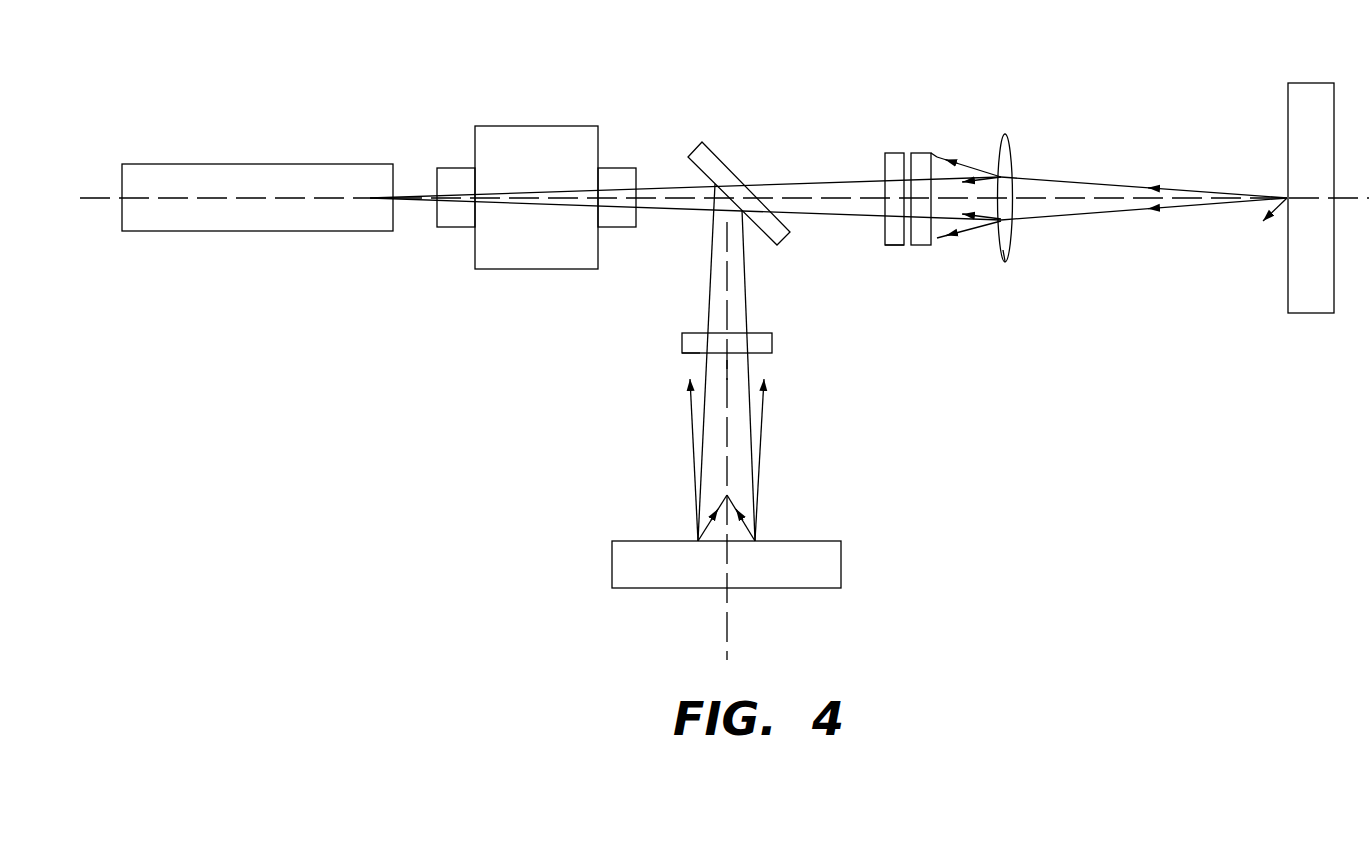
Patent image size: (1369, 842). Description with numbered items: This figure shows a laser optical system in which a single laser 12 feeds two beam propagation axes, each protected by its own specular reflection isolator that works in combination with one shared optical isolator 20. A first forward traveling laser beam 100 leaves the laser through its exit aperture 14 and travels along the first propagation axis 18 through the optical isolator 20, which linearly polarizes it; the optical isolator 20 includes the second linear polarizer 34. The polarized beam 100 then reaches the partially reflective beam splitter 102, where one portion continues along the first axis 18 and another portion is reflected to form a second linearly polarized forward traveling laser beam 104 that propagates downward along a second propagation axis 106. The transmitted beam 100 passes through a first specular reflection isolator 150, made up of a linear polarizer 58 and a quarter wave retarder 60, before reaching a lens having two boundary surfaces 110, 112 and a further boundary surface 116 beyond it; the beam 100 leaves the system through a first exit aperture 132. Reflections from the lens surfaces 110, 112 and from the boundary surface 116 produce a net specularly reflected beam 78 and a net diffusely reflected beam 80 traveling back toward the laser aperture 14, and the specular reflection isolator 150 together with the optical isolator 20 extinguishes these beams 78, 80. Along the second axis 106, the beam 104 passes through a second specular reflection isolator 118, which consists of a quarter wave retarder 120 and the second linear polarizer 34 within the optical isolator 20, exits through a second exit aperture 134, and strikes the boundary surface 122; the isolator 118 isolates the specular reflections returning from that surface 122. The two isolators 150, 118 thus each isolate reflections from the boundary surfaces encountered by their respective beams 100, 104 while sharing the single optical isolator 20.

The laser 12 is at (232, 170).
The exit aperture 14 is at (395, 180).
The first propagation axis 18 is at (821, 195).
The optical isolator 20 is at (466, 249).
The second linear polarizer 34 is at (617, 175).
The linear polarizer 58 is at (895, 162).
The quarter wave retarder 60 is at (915, 160).
The net specularly reflected beam 78 is at (961, 158).
The net diffusely reflected beam 80 is at (1274, 184).
The first forward traveling laser beam 100 is at (657, 193).
The partially reflective beam splitter 102 is at (708, 158).
The second forward traveling laser beam 104 is at (733, 289).
The second propagation axis 106 is at (728, 370).
The lens boundary surface 110 is at (1003, 250).
The lens boundary surface 112 is at (1013, 238).
The boundary surface 116 is at (1288, 103).
The second specular reflection isolator 118 is at (624, 232).
The quarter wave retarder 120 is at (765, 346).
The boundary surface 122 is at (641, 540).
The first exit aperture 132 is at (937, 156).
The second exit aperture 134 is at (693, 355).
The first specular reflection isolator 150 is at (896, 250).